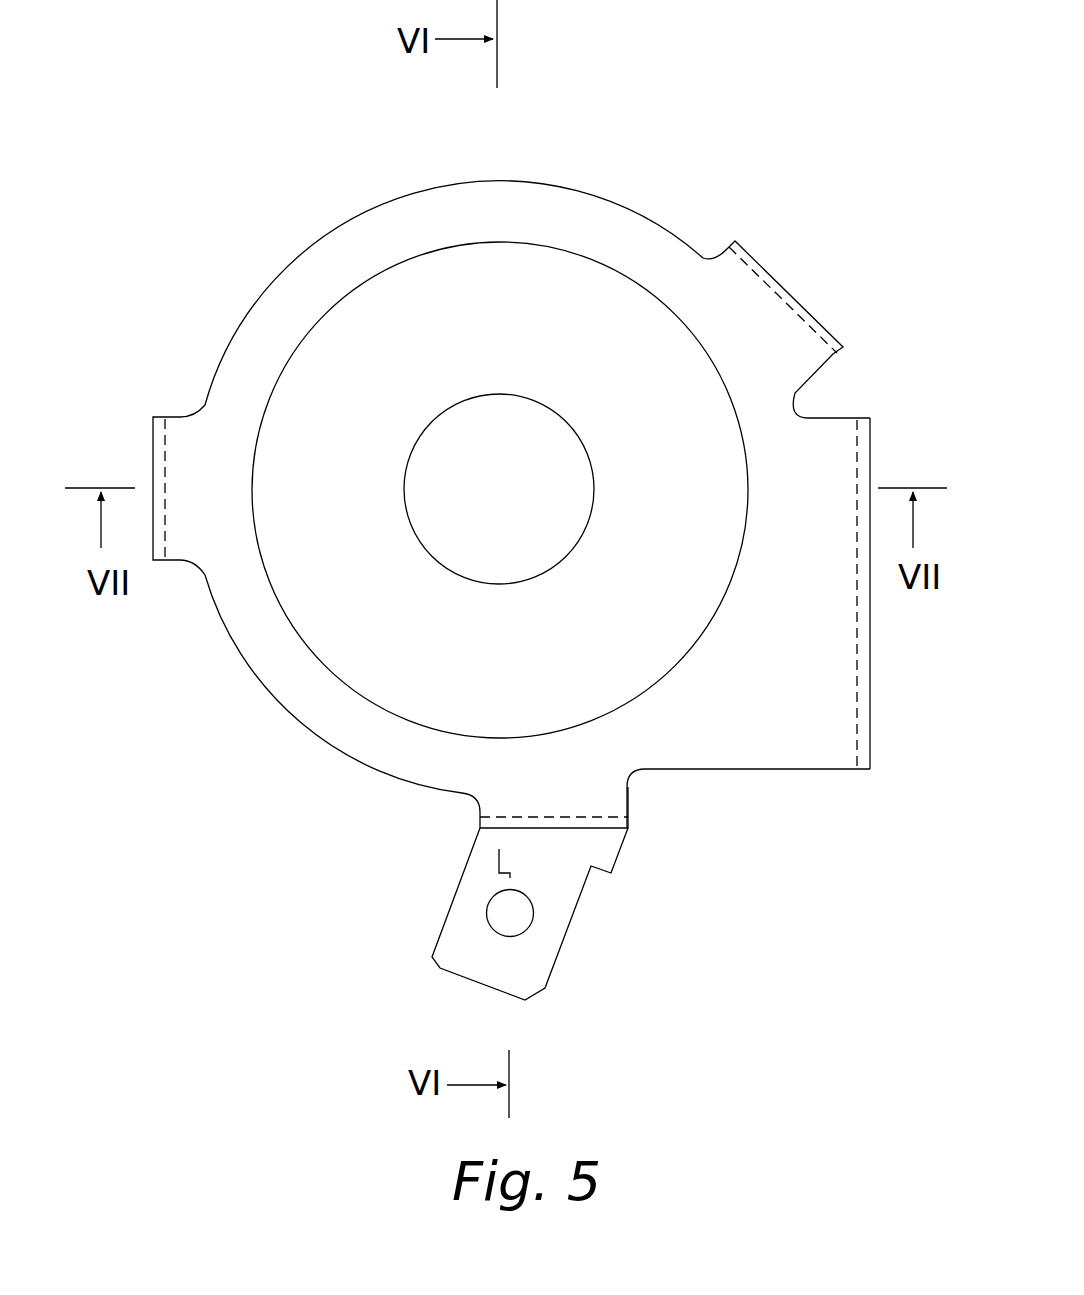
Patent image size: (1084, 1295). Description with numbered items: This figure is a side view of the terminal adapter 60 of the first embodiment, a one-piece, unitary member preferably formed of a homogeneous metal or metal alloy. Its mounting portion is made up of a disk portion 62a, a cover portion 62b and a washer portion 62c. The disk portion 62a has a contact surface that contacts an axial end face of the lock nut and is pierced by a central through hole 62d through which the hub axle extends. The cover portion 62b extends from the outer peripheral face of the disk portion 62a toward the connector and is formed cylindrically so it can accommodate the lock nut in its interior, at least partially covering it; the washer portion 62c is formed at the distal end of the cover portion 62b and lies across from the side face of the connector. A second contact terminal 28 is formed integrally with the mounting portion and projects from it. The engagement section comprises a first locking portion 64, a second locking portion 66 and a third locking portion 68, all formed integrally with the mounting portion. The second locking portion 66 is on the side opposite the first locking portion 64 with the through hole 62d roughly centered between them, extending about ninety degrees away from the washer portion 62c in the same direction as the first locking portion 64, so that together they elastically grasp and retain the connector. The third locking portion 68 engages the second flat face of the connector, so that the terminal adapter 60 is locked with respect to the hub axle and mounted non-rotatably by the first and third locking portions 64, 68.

The terminal adapter 60 is at (502, 558).
The disk portion 62a is at (618, 687).
The cover portion 62b is at (408, 718).
The washer portion 62c is at (528, 208).
The through hole 62d is at (527, 404).
The first locking portion 64 is at (869, 448).
The second locking portion 66 is at (152, 431).
The third locking portion 68 is at (788, 290).
The second contact terminal 28 is at (533, 972).